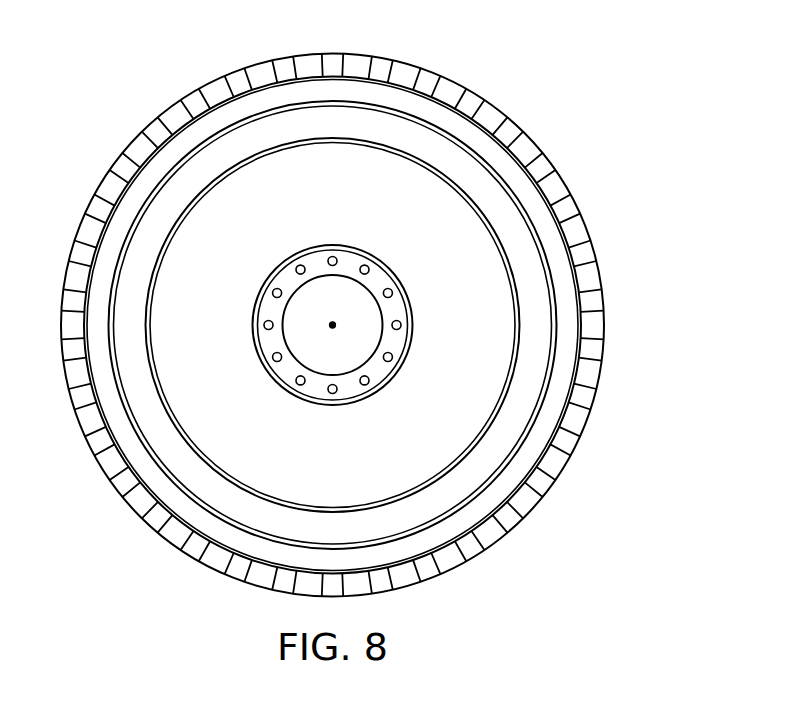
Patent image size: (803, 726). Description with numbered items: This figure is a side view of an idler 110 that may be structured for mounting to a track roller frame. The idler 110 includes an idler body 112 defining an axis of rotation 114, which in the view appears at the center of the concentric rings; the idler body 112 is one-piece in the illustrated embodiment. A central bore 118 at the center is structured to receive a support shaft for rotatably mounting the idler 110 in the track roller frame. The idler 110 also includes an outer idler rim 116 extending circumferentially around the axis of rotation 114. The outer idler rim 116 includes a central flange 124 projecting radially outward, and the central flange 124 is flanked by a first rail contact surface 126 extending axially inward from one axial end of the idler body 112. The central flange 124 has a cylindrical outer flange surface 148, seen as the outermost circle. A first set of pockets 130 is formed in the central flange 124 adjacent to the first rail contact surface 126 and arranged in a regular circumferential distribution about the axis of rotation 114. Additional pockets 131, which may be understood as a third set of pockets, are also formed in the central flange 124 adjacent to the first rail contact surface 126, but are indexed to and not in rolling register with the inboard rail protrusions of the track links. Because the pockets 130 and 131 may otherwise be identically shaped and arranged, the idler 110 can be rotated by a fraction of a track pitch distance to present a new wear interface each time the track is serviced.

The idler 110 is at (388, 304).
The idler body 112 is at (567, 430).
The axis of rotation 114 is at (327, 337).
The outer idler rim 116 is at (517, 121).
The central bore 118 is at (371, 303).
The central flange 124 is at (603, 292).
The first rail contact surface 126 is at (332, 304).
The first set of pockets 130 is at (238, 84).
The additional pockets (third set of pockets) 131 is at (292, 67).
The cylindrical outer flange surface 148 is at (572, 215).